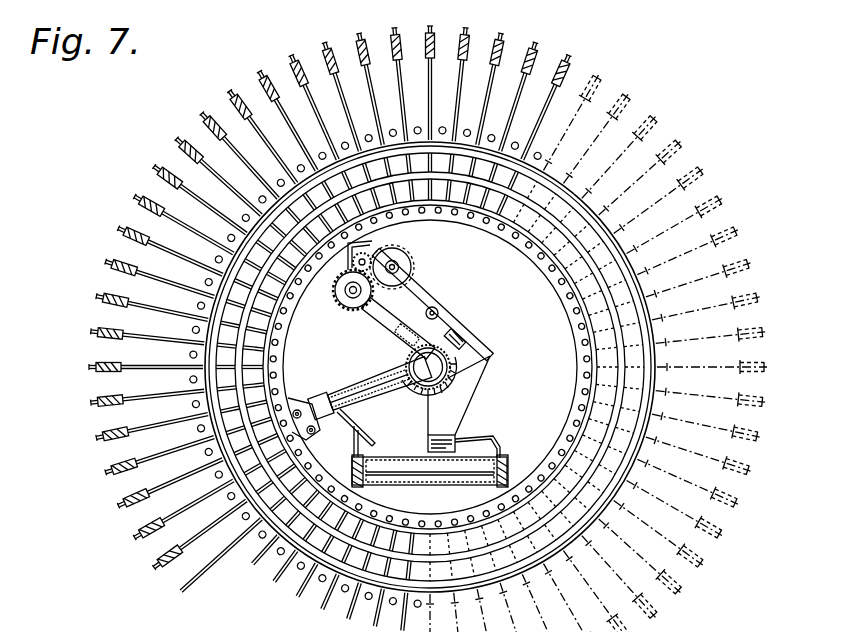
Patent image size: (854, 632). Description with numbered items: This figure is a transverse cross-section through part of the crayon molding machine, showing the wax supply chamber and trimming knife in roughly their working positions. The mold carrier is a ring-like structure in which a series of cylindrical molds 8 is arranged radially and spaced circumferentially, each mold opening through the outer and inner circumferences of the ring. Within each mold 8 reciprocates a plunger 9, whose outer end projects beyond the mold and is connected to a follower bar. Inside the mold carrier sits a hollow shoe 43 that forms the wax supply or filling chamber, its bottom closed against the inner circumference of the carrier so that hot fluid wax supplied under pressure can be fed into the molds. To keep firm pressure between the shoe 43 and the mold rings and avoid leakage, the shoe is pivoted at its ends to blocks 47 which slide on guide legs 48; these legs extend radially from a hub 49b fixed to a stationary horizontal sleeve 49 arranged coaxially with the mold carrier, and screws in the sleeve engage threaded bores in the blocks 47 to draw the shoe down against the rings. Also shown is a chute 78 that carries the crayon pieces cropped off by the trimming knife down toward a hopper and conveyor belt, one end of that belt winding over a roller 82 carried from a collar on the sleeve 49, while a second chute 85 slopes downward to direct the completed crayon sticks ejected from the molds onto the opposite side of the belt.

The plunger 9 is at (220, 143).
The cylindrical mold 8 is at (302, 286).
The chute 78 is at (420, 290).
The hub 49b is at (460, 334).
The stationary horizontal sleeve 49 is at (443, 373).
The block 47 is at (330, 394).
The guide leg 48 is at (375, 375).
The second chute 85 is at (361, 427).
The hollow shoe 43 is at (304, 433).
The roller 82 is at (437, 470).